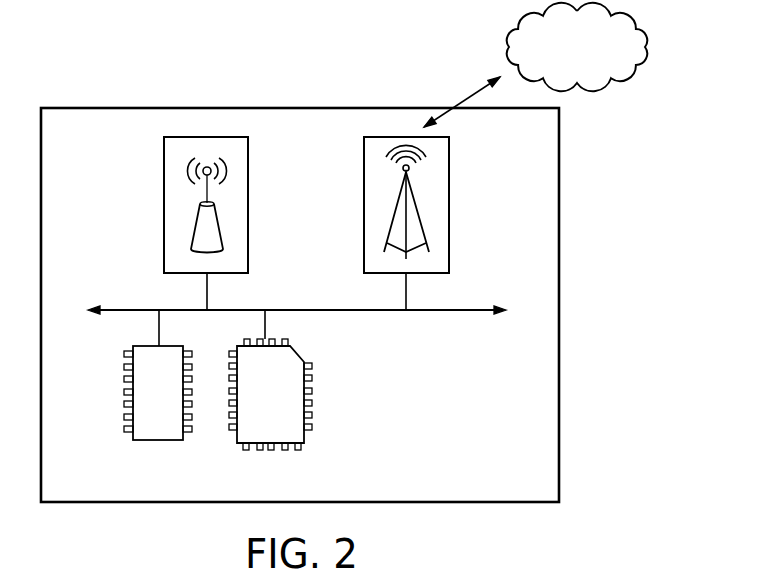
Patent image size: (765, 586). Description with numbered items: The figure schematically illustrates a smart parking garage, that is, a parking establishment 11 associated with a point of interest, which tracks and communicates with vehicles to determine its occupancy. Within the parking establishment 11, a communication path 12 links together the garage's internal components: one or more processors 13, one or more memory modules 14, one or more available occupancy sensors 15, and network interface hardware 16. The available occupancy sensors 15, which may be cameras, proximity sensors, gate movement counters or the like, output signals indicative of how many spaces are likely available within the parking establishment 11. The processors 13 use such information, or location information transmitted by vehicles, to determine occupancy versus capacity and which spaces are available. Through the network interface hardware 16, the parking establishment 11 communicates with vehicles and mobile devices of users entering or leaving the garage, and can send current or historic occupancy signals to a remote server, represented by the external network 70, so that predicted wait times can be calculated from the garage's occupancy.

The parking establishment 11 is at (300, 271).
The communication path 12 is at (124, 310).
The processor 13 is at (159, 442).
The memory module 14 is at (238, 446).
The available occupancy sensor 15 is at (206, 137).
The network interface hardware 16 is at (394, 137).
The network cloud 70 is at (657, 47).